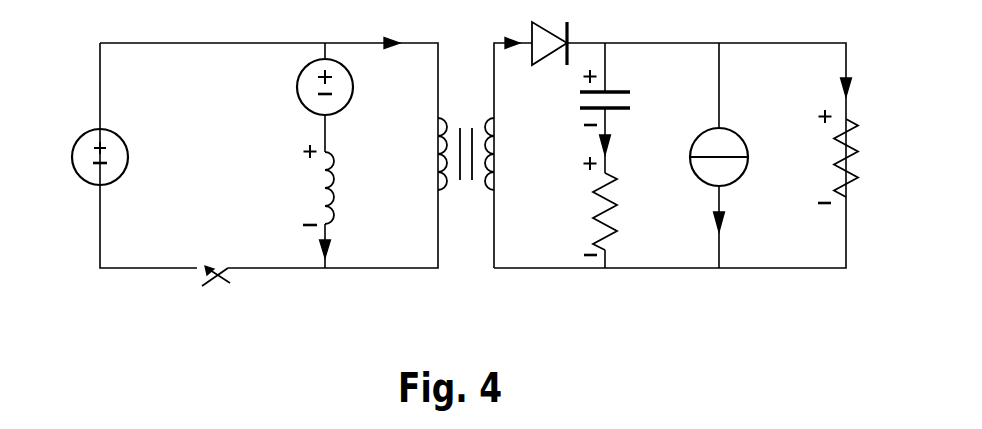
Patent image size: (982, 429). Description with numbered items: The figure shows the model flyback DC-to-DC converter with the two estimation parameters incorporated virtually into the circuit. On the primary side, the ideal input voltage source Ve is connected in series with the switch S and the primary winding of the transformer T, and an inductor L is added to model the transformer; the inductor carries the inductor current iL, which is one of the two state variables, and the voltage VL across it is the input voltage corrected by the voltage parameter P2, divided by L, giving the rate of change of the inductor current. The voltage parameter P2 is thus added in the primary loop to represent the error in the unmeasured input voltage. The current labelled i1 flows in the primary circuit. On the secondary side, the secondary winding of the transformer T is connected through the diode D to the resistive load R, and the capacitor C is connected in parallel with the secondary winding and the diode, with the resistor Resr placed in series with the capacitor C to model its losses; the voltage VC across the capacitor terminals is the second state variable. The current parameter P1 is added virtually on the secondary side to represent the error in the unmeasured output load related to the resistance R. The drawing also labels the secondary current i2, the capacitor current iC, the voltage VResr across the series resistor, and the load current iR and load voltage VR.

The input voltage source Ve is at (85, 157).
The switch S is at (216, 289).
The voltage parameter P2 is at (311, 87).
The primary current i1 is at (391, 30).
The inductor L is at (346, 188).
The inductor voltage VL is at (302, 185).
The inductor current iL is at (338, 250).
The transformer T is at (466, 154).
The secondary current i2 is at (511, 30).
The diode D is at (549, 43).
The capacitor C is at (619, 95).
The capacitor voltage VC is at (576, 97).
The capacitor current iC is at (617, 148).
The series resistor Resr is at (626, 211).
The voltage across equivalent series resistance VResr is at (567, 206).
The current parameter P1 is at (732, 180).
The resistive load R is at (858, 158).
The load current iR is at (860, 88).
The load voltage VR is at (818, 156).